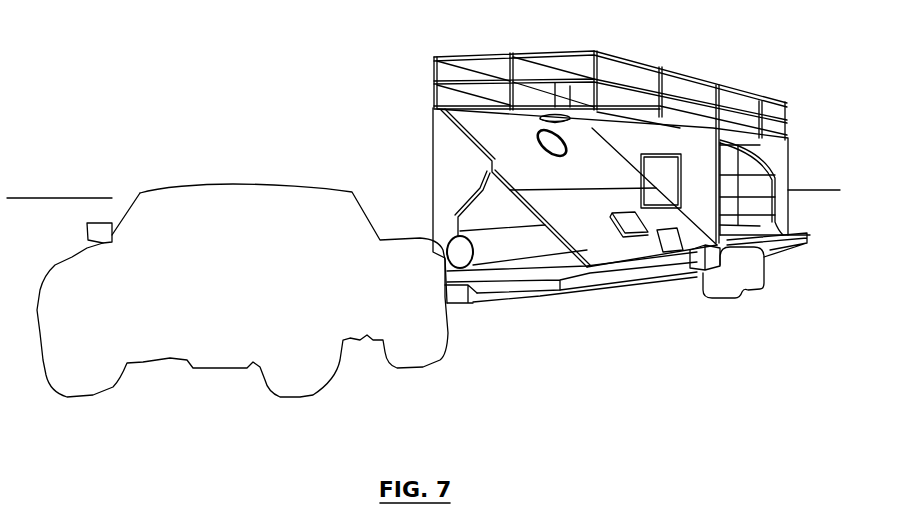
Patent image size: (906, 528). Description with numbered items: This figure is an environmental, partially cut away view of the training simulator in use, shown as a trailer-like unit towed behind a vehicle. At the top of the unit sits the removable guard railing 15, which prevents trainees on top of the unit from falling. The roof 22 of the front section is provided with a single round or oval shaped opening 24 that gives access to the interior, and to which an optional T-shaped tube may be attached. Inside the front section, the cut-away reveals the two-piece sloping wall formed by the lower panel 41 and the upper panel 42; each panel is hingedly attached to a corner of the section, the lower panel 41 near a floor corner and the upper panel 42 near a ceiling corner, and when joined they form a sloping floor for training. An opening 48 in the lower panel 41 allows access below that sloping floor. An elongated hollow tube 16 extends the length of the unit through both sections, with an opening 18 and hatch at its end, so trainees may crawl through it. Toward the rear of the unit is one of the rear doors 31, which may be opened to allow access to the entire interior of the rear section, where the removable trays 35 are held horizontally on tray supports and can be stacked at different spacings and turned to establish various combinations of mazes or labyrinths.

The removable guard railing 15 is at (788, 113).
The elongated hollow tube 16 is at (490, 243).
The opening 18 is at (460, 250).
The roof 22 is at (627, 122).
The round or oval shaped opening 24 is at (553, 114).
The rear door 31 is at (760, 190).
The removable tray 35 is at (752, 173).
The lower panel 41 is at (590, 240).
The upper panel 42 is at (478, 127).
The opening 48 is at (633, 230).